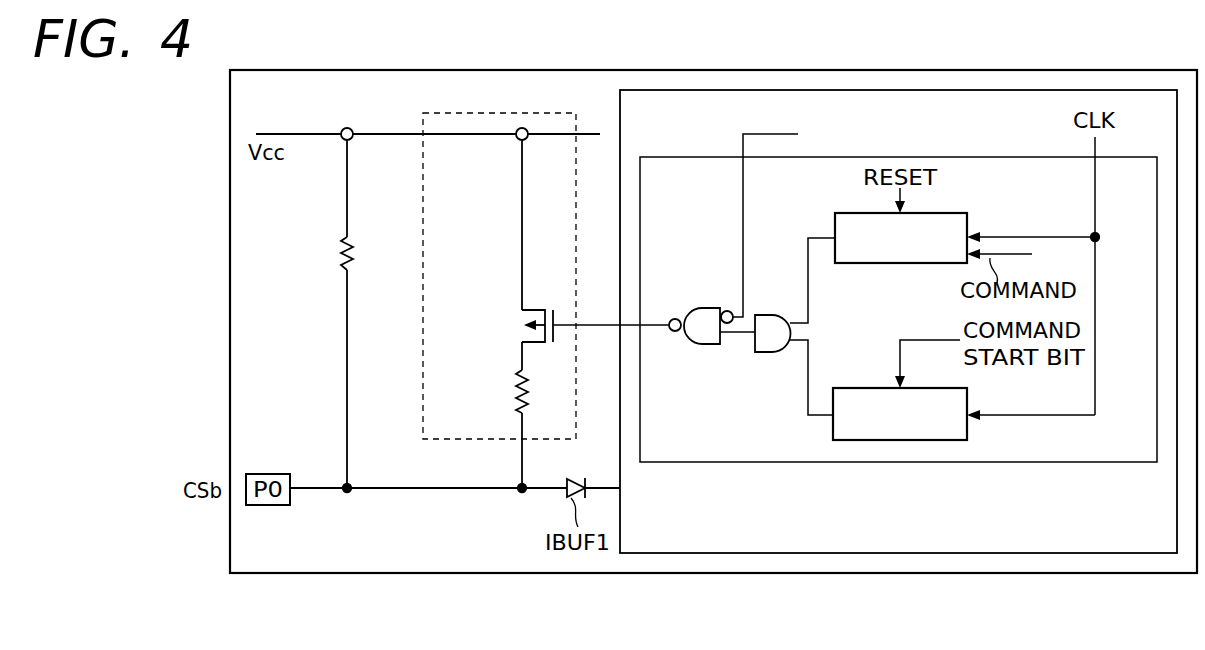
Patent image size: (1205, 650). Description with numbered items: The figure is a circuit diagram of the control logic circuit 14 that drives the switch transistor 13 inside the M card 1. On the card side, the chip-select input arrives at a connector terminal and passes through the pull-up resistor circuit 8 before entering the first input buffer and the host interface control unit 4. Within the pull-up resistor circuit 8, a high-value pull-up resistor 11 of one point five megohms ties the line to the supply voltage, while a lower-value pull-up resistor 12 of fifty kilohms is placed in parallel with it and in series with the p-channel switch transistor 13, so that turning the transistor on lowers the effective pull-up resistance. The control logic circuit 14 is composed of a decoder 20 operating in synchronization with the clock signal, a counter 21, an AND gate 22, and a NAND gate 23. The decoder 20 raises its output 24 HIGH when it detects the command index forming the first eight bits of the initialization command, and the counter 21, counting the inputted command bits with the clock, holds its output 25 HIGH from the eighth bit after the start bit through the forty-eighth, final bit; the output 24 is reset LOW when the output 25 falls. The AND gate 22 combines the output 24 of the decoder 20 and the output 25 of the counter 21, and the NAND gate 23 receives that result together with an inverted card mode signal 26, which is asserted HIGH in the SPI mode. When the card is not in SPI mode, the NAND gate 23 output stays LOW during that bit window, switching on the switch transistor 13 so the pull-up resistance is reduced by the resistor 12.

The M card 1 is at (897, 70).
The host interface control unit 4 is at (620, 116).
The pull-up resistor circuit 8 is at (423, 128).
The pull-up resistor 11 is at (345, 240).
The pull-up resistor 12 is at (530, 411).
The switch transistor 13 is at (527, 324).
The control logic circuit 14 is at (727, 462).
The decoder 20 is at (867, 264).
The counter 21 is at (864, 388).
The AND gate 22 is at (773, 315).
The NAND gate 23 is at (705, 308).
The output of the decoder 24 is at (807, 257).
The output of the counter 25 is at (807, 373).
The card mode signal 26 is at (743, 146).